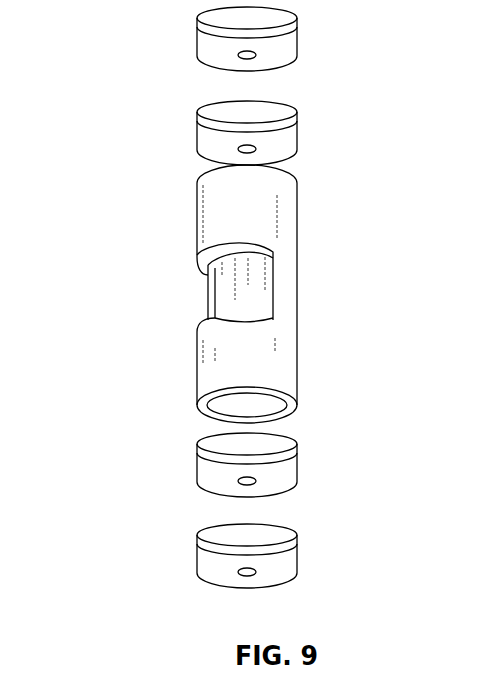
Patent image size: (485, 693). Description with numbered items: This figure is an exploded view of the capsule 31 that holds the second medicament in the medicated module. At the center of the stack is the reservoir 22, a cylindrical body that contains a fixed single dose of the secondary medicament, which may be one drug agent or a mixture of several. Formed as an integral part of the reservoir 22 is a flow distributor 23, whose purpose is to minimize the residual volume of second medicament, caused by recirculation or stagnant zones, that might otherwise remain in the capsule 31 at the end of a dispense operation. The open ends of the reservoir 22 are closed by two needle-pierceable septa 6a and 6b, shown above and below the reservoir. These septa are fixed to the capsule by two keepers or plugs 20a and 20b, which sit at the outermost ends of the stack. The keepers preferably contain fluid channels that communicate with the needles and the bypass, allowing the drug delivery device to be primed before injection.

The capsule 31 is at (225, 303).
The keeper 20a is at (288, 34).
The septum 6a is at (280, 123).
The reservoir 22 is at (258, 360).
The flow distributor 23 is at (255, 289).
The septum 6b is at (264, 449).
The keeper 20b is at (293, 556).